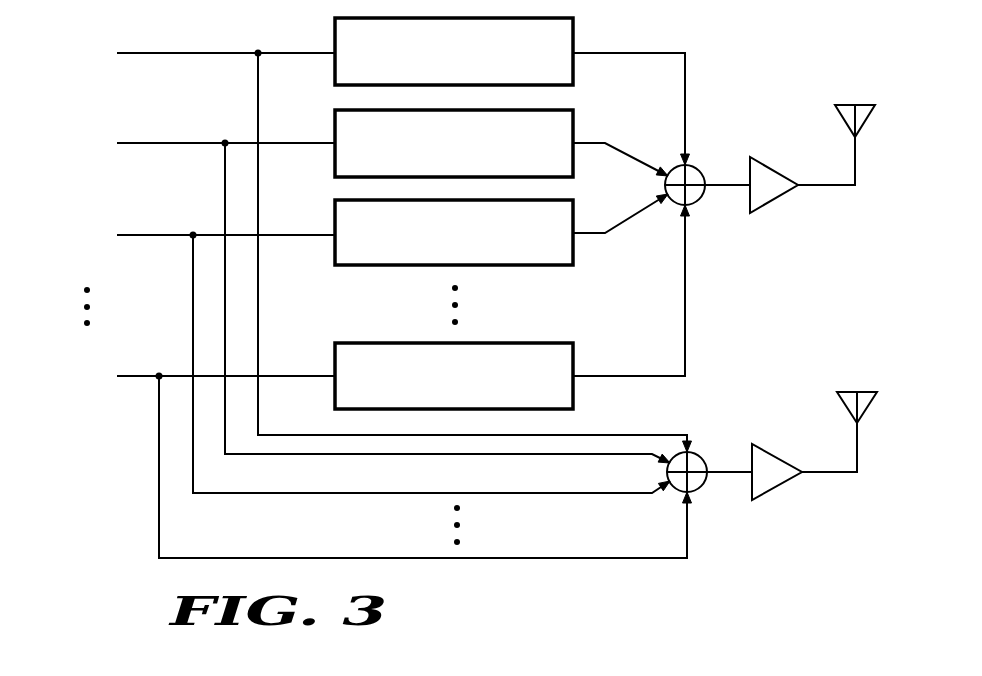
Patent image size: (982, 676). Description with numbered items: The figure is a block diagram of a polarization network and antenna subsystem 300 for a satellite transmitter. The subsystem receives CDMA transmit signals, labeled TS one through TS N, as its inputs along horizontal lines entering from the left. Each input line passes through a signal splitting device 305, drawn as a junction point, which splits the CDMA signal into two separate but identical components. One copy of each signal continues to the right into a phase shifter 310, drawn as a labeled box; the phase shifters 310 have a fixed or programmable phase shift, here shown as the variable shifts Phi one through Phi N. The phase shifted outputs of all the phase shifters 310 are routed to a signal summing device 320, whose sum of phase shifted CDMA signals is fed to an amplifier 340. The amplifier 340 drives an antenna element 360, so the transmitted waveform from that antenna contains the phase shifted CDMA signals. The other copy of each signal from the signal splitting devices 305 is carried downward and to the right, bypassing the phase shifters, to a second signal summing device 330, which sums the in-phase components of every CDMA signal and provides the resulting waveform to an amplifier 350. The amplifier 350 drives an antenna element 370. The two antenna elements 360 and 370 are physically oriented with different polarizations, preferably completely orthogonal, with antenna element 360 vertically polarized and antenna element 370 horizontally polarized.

The polarization network and antenna subsystem 300 is at (97, 612).
The signal splitting device 305 is at (256, 52).
The phase shifter 310 is at (335, 83).
The signal summing device 320 is at (698, 204).
The signal summing device 330 is at (701, 487).
The amplifier 340 is at (772, 170).
The amplifier 350 is at (776, 458).
The antenna element 360 is at (866, 105).
The antenna element 370 is at (868, 392).